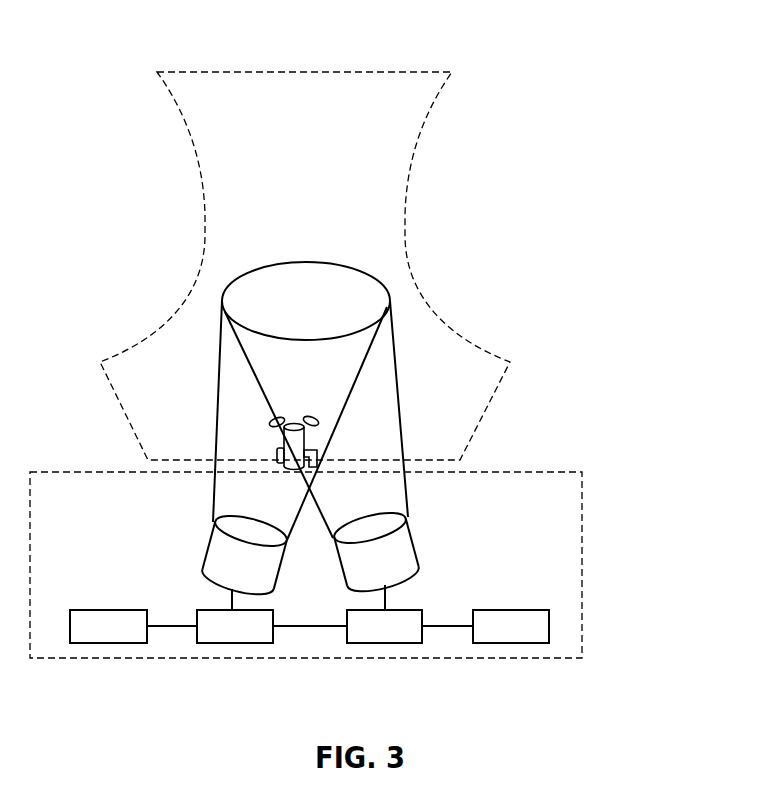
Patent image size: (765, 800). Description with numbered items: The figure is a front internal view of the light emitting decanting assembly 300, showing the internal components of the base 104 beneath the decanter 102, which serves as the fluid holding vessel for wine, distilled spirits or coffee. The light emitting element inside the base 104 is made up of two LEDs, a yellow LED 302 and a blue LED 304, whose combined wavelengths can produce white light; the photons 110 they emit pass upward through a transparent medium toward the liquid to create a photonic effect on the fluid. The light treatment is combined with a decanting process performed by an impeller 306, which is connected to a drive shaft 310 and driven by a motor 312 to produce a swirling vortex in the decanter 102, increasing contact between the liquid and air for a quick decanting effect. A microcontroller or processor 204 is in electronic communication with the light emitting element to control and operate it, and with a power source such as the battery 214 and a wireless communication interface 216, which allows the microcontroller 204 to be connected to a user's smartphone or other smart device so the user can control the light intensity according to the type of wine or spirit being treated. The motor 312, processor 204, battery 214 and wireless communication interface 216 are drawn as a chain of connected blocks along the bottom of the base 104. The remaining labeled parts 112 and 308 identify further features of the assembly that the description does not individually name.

The imaging system 300 is at (138, 40).
The decanter 102 is at (420, 144).
The photons 110 is at (387, 290).
The imaging devices 112 is at (417, 545).
The base 104 is at (583, 547).
The yellow LED 302 is at (267, 574).
The blue LED 304 is at (403, 574).
The impeller 306 is at (297, 443).
The device marker 308 is at (277, 457).
The drive shaft 310 is at (294, 427).
The motor 312 is at (108, 626).
The microcontroller 204 is at (232, 626).
The battery 214 is at (384, 626).
The wireless communication interface 216 is at (510, 627).